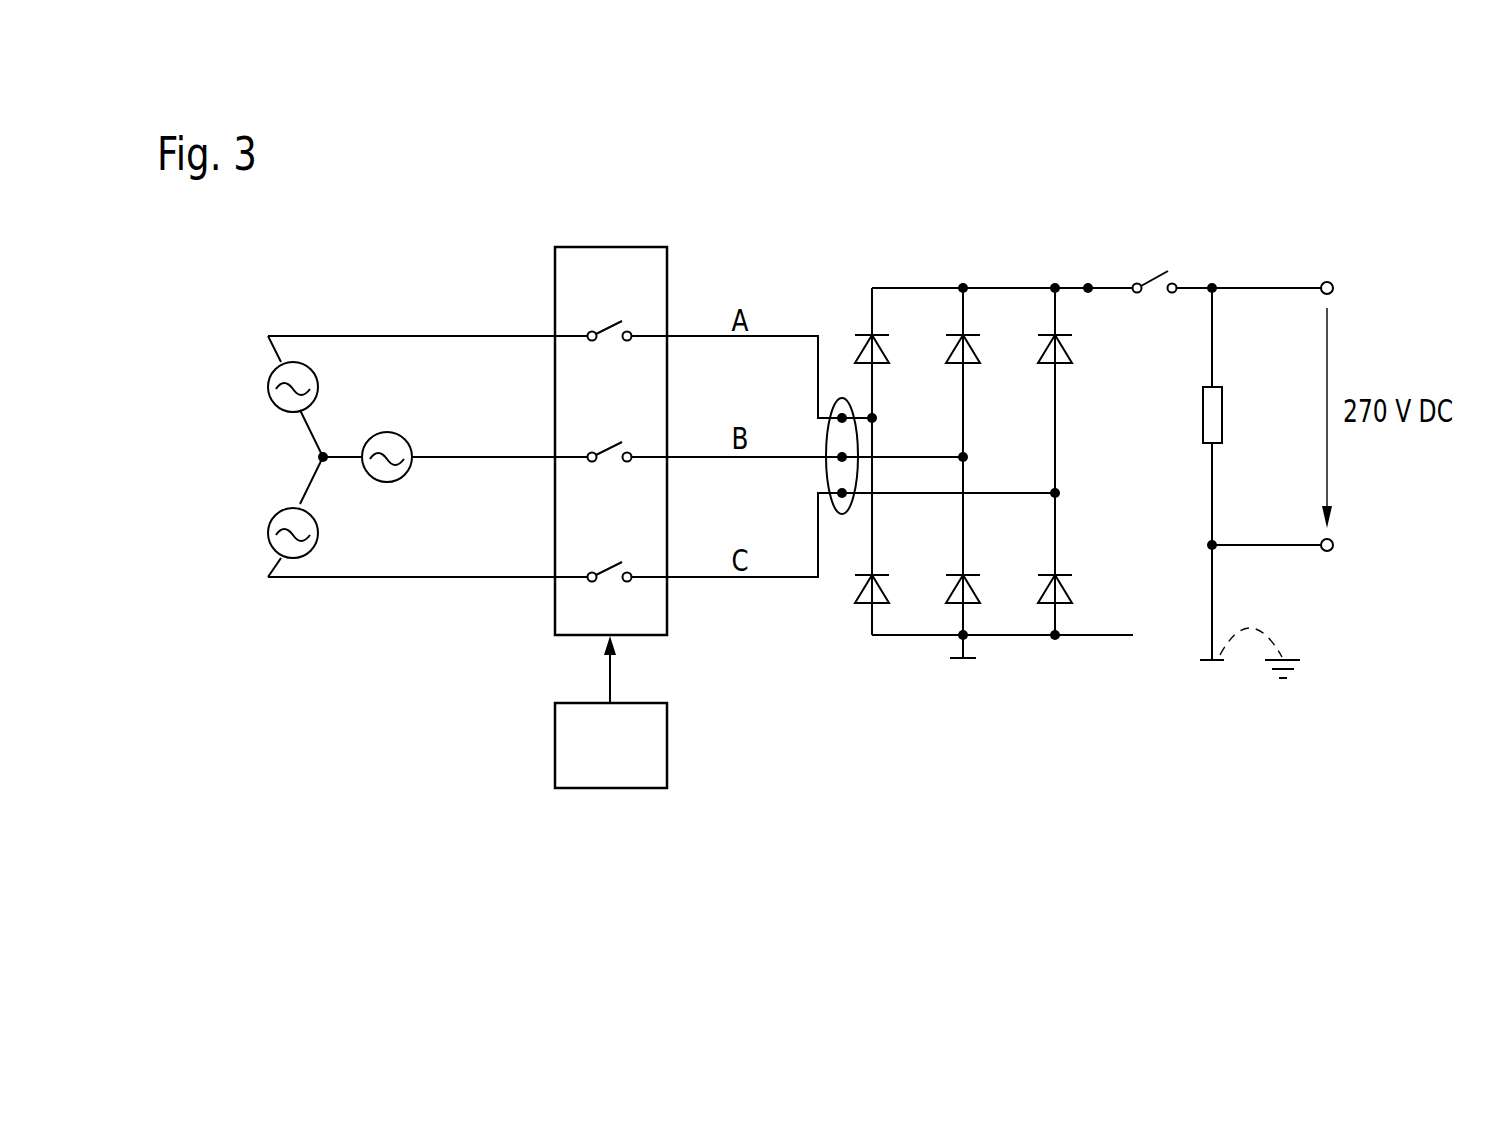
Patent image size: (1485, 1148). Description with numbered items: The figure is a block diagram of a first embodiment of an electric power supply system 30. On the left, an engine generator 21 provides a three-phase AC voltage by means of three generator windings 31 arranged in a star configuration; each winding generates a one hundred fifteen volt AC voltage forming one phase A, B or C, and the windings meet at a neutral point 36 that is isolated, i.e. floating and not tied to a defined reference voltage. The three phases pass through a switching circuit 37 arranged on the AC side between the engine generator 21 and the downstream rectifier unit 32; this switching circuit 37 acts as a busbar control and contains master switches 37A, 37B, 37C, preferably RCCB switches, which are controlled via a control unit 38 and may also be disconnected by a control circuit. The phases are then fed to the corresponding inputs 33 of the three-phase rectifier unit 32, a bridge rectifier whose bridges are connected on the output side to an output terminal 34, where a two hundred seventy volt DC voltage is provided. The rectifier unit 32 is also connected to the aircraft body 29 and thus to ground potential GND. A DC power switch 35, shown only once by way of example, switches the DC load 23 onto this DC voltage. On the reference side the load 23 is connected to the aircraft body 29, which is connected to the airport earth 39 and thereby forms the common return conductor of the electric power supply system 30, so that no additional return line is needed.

The engine generator 21 is at (188, 267).
The generator windings 31 is at (291, 362).
The neutral point 36 is at (318, 457).
The switching circuit 37 is at (636, 247).
The master switch 37A is at (607, 318).
The master switch 37B is at (607, 439).
The master switch 37C is at (607, 559).
The control unit 38 is at (610, 788).
The rectifier unit 32 is at (817, 245).
The inputs 33 is at (835, 397).
The output terminal 34 is at (1090, 286).
The DC power switch 35 is at (1163, 271).
The DC load 23 is at (1203, 417).
The aircraft body 29 is at (958, 658).
The airport earth 39 is at (1297, 658).
The electric power supply system 30 is at (1229, 797).